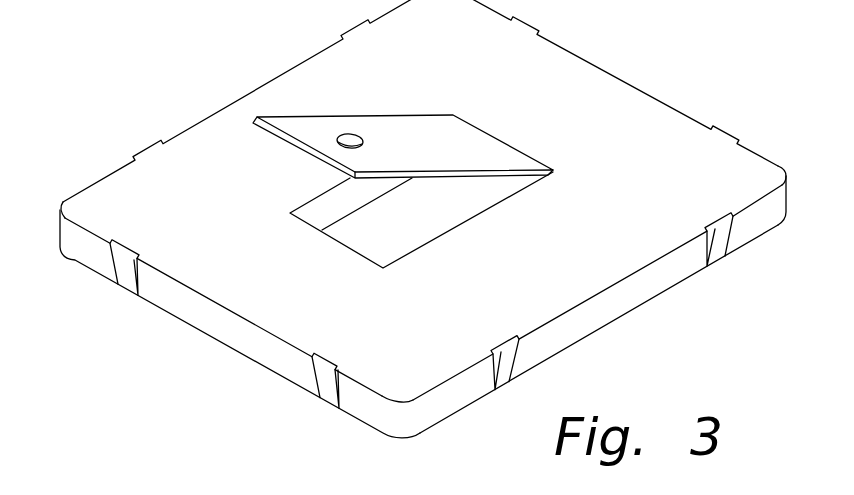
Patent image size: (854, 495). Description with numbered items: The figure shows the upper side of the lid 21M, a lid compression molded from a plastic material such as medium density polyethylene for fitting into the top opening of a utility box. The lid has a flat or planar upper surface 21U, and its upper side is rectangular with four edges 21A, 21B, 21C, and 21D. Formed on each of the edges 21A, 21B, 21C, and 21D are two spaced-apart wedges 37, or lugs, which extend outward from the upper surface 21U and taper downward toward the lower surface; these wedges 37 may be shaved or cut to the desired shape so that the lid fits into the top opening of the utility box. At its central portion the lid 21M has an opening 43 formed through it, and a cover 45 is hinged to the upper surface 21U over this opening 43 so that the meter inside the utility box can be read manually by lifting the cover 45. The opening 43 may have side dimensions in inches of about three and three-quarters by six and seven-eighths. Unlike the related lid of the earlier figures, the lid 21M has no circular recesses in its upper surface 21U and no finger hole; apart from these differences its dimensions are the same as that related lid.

The lid 21M is at (147, 361).
The upper surface 21U is at (175, 172).
The edge 21A is at (182, 297).
The edge 21B is at (644, 297).
The edge 21C is at (674, 107).
The edge 21D is at (293, 62).
The wedges 37 is at (487, 396).
The opening 43 is at (380, 233).
The cover 45 is at (452, 147).